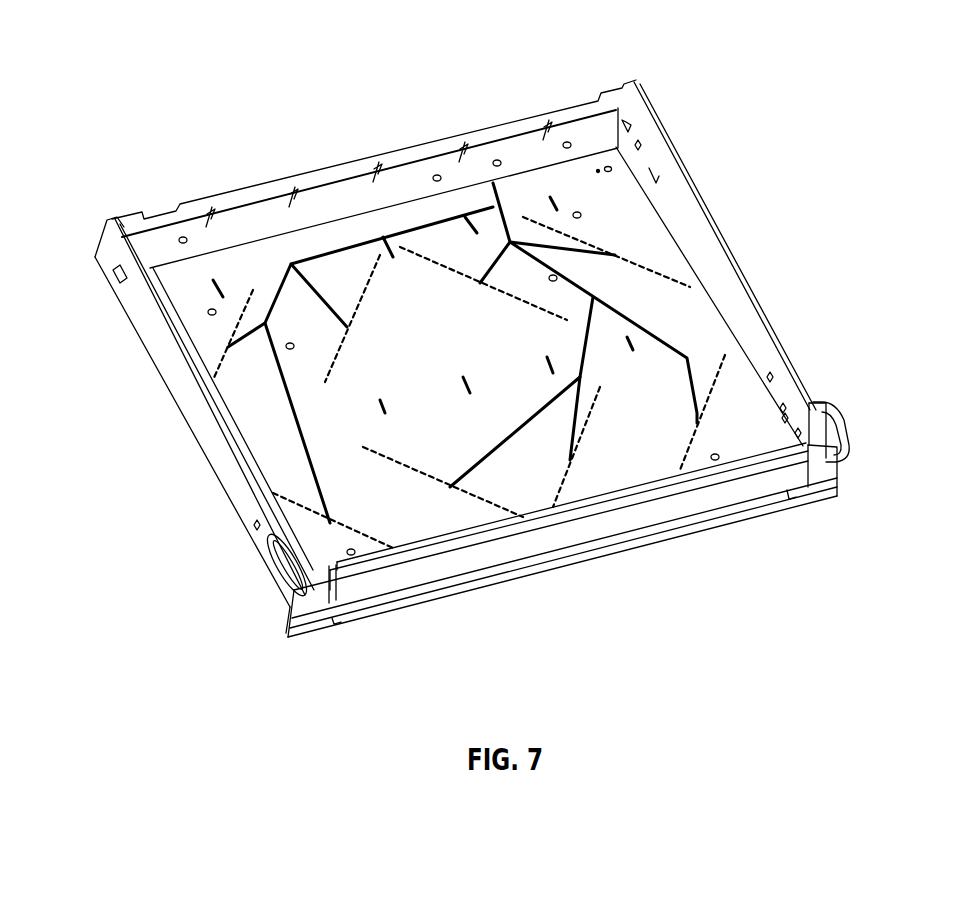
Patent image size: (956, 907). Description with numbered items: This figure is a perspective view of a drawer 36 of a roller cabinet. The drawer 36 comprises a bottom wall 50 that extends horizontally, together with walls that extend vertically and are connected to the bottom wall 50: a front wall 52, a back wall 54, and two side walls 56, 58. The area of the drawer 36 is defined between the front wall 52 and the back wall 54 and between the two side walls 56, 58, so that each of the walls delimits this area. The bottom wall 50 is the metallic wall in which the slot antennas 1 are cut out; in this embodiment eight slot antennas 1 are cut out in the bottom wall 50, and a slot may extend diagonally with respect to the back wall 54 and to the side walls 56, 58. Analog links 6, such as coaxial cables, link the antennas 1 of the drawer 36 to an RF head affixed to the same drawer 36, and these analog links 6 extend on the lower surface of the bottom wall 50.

The drawer 36 is at (108, 119).
The back wall 54 is at (336, 150).
The side wall 56 is at (200, 442).
The side wall 58 is at (742, 318).
The front wall 52 is at (383, 597).
The bottom wall 50 is at (606, 204).
The analog link 6 is at (632, 296).
The slot antenna 1 is at (428, 497).